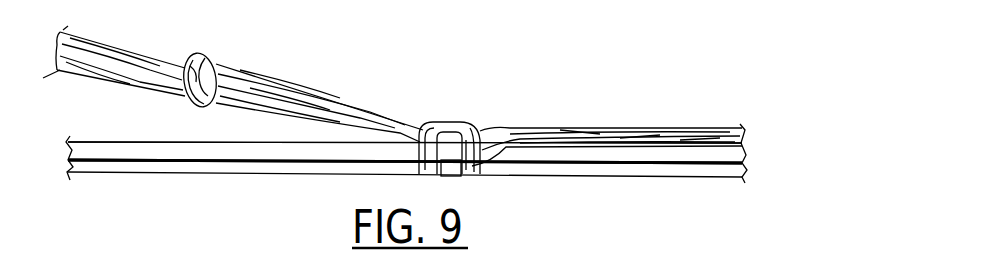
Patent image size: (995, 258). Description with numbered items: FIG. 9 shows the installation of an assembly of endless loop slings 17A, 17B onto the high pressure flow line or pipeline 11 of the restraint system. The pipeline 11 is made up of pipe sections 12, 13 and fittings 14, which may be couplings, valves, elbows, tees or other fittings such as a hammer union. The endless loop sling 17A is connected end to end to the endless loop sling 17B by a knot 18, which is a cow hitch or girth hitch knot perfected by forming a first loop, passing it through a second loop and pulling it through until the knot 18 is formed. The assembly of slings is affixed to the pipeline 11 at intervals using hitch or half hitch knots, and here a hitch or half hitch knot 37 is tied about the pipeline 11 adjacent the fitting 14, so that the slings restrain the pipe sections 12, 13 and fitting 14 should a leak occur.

The high pressure flow line or pipeline 11 is at (225, 162).
The pipe section 12 is at (670, 153).
The pipe section 13 is at (135, 152).
The fitting 14 is at (450, 172).
The endless loop sling 17A is at (108, 60).
The endless loop sling 17B is at (340, 100).
The knot 18 is at (212, 56).
The hitch or half hitch knot 37 is at (430, 123).